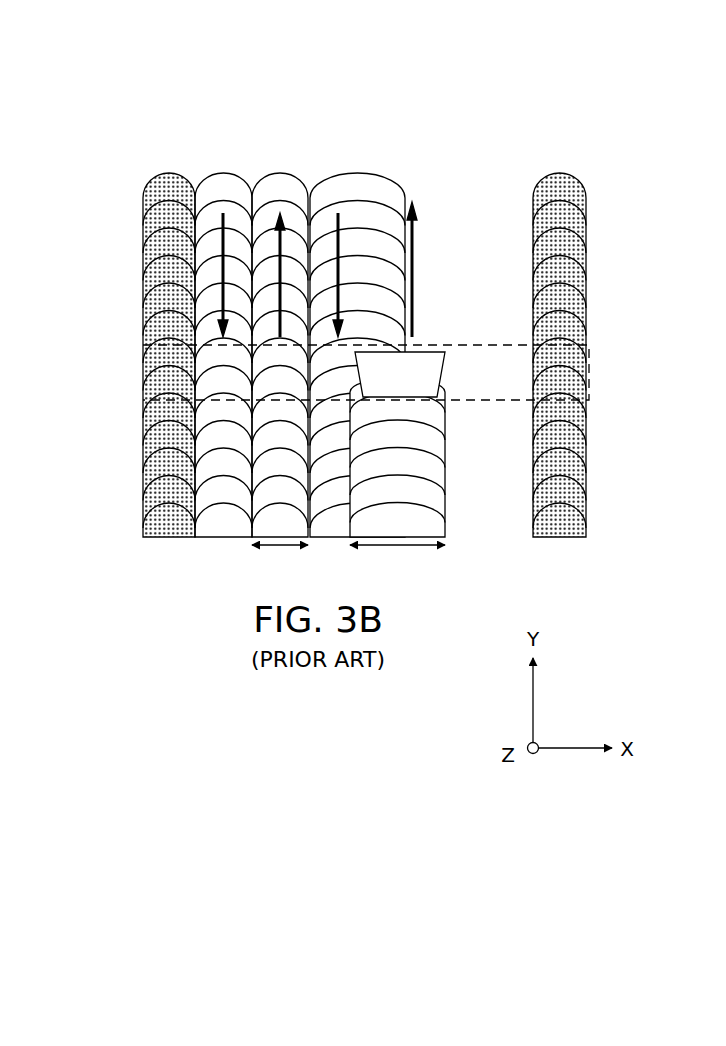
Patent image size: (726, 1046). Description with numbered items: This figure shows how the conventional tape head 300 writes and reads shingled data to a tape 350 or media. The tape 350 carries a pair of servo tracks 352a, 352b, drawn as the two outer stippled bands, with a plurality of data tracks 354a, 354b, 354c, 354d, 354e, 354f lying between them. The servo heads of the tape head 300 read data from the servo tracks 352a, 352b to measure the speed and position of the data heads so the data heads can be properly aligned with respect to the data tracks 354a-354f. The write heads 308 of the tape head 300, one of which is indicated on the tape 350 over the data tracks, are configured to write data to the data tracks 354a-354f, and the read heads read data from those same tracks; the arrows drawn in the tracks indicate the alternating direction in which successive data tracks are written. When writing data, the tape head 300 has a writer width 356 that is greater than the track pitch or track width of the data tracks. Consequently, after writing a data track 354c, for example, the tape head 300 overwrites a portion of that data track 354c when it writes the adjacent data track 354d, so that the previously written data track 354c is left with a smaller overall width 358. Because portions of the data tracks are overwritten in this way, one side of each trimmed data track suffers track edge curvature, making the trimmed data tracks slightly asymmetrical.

The tape 350 is at (196, 77).
The servo track 352a is at (168, 331).
The servo track 352b is at (559, 313).
The data track 354a is at (223, 313).
The data track 354b is at (280, 331).
The data track 354c is at (357, 313).
The data track 354d is at (397, 331).
The data track 354e is at (438, 213).
The data track 354f is at (500, 147).
The tape head 300 is at (485, 345).
The write heads 308 is at (380, 385).
The writer width 356 is at (397, 564).
The smaller overall width 358 is at (280, 564).